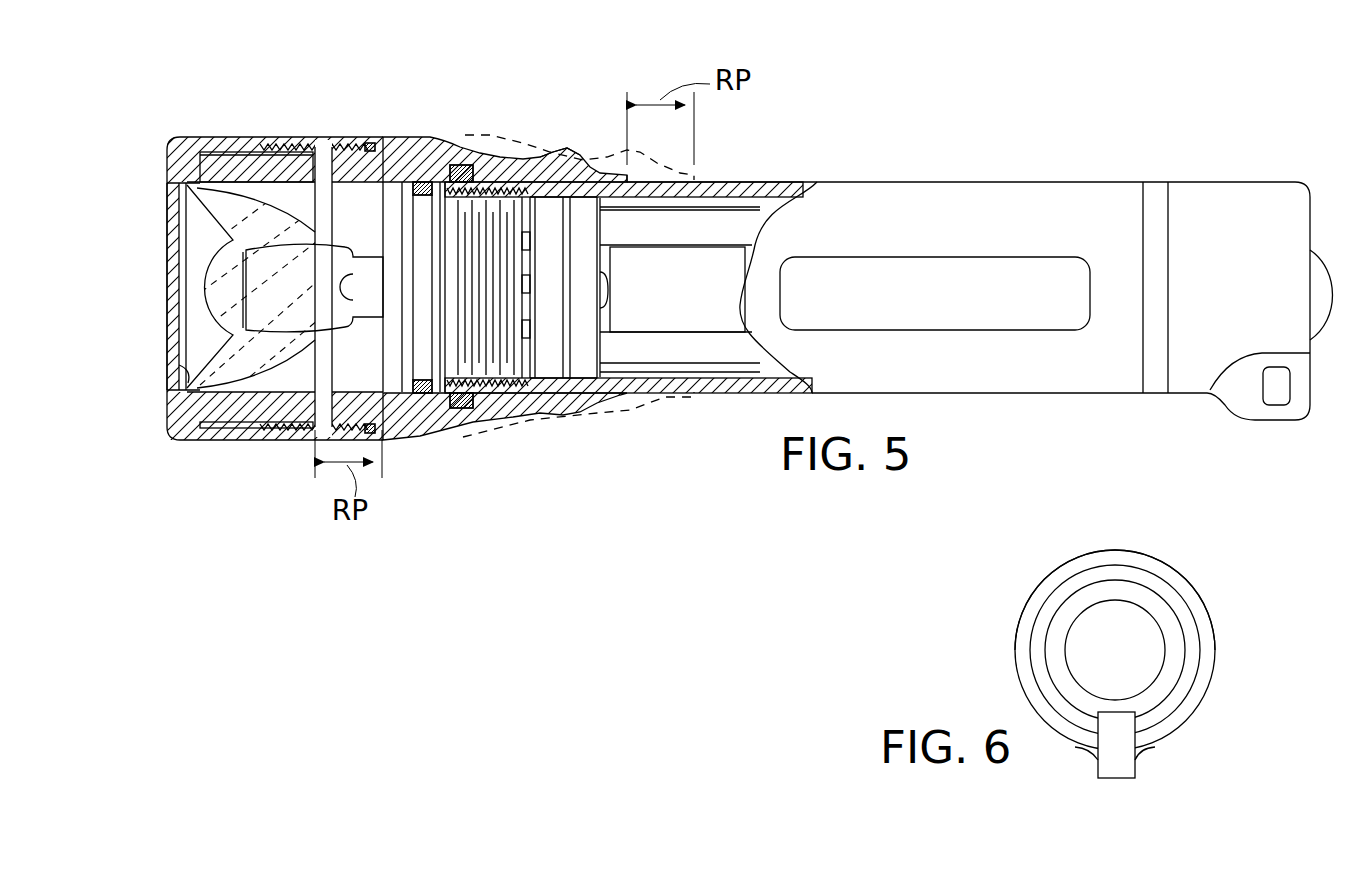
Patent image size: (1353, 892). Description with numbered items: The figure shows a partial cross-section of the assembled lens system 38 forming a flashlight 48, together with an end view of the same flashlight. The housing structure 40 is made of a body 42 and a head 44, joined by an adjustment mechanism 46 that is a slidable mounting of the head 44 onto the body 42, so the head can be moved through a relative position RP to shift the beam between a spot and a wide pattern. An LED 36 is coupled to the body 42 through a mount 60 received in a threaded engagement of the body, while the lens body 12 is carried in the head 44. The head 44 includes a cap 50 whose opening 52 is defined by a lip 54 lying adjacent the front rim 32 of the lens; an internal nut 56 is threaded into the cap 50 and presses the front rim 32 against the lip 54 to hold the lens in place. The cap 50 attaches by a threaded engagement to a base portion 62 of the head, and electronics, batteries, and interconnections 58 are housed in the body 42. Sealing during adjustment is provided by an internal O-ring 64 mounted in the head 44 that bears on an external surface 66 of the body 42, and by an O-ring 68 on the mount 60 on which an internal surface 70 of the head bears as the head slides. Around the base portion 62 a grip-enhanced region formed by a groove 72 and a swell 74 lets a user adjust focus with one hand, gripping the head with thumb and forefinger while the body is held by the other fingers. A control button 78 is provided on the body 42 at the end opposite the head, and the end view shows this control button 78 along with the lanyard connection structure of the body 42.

In FIG. 5, the lens body 12 is at (220, 290).
In FIG. 5, the front rim 32 is at (187, 190).
In FIG. 5, the LED 36 is at (350, 250).
In FIG. 6, the lens system 38 is at (1052, 552).
In FIG. 5, the housing structure 40 is at (510, 72).
In FIG. 5, the body 42 is at (898, 208).
In FIG. 6, the body 42 is at (1030, 650).
In FIG. 5, the head 44 is at (424, 108).
In FIG. 5, the adjustment mechanism 46 is at (708, 163).
In FIG. 5, the flashlight 48 is at (780, 182).
In FIG. 5, the cap 50 is at (190, 137).
In FIG. 5, the opening 52 is at (148, 314).
In FIG. 5, the lip 54 is at (187, 377).
In FIG. 5, the internal nut 56 is at (258, 165).
In FIG. 5, the electronics, batteries, and interconnections 58 is at (655, 345).
In FIG. 5, the mount 60 is at (420, 190).
In FIG. 5, the base portion 62 is at (511, 412).
In FIG. 5, the internal O-ring 64 is at (457, 410).
In FIG. 5, the external surface 66 is at (545, 408).
In FIG. 5, the O-ring 68 is at (420, 395).
In FIG. 5, the internal surface 70 is at (397, 215).
In FIG. 5, the groove 72 is at (528, 160).
In FIG. 5, the swell 74 is at (568, 150).
In FIG. 5, the control button 78 is at (1308, 250).
In FIG. 6, the control button 78 is at (1095, 635).